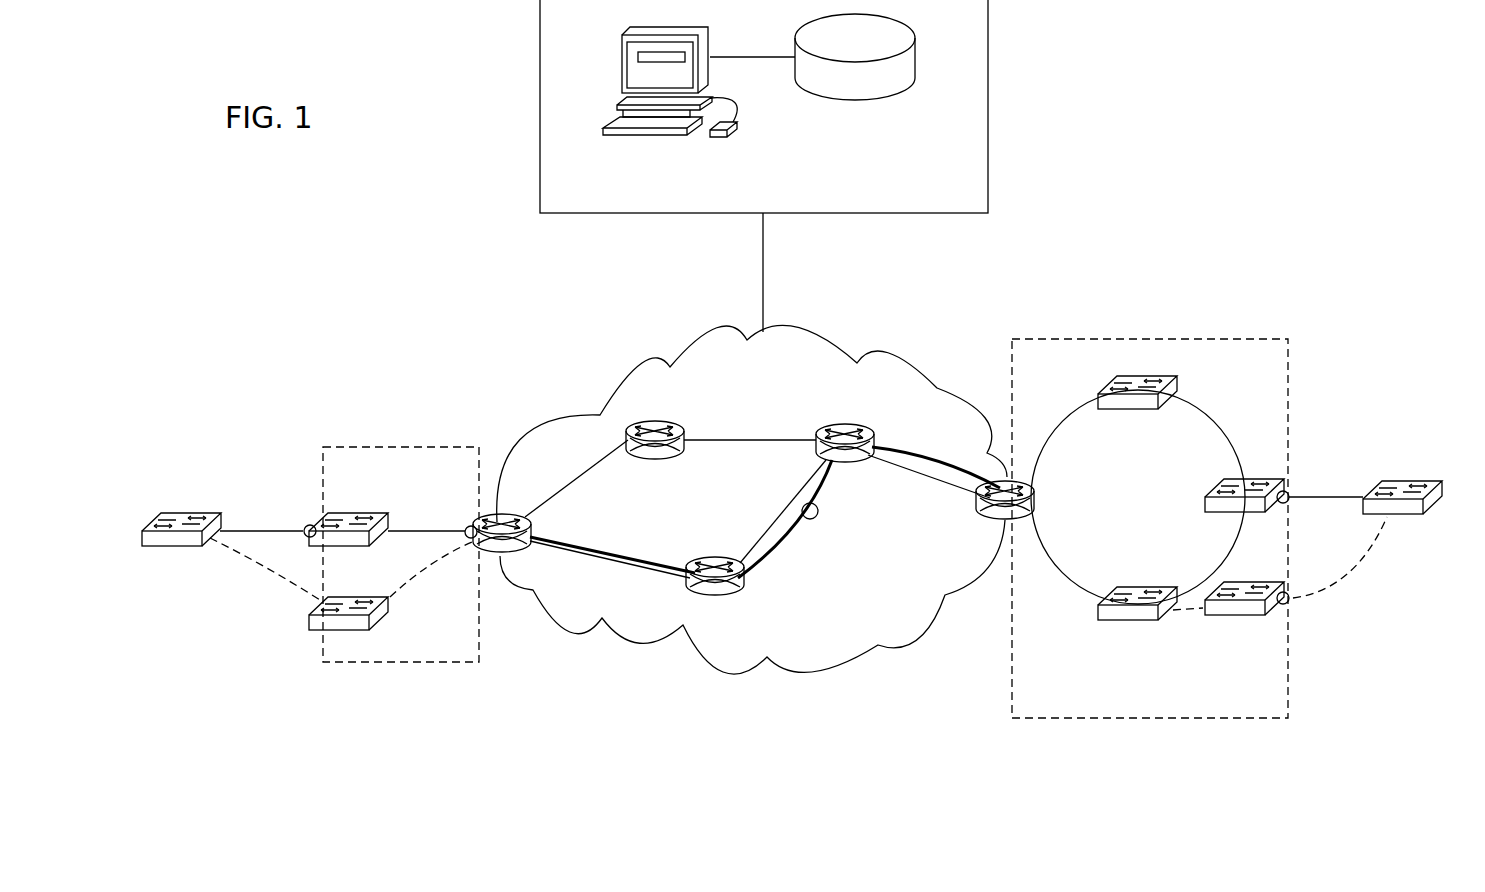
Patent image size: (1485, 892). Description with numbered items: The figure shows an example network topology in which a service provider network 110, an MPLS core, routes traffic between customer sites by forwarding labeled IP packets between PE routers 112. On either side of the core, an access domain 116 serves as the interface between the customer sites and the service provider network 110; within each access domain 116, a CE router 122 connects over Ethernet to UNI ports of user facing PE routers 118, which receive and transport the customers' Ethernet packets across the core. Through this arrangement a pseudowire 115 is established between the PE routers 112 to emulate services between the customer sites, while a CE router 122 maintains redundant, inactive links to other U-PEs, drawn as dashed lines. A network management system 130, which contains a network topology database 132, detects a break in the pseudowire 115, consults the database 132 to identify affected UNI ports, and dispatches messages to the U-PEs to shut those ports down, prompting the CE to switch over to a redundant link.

The service provider network 110 is at (912, 345).
The PE router 112 is at (493, 557).
The pseudowire 115 is at (816, 517).
The access domain 116 is at (405, 445).
The user facing PE router 118 is at (340, 513).
The CE router 122 is at (172, 513).
The network management system 130 is at (817, 106).
The network topology database 132 is at (877, 98).